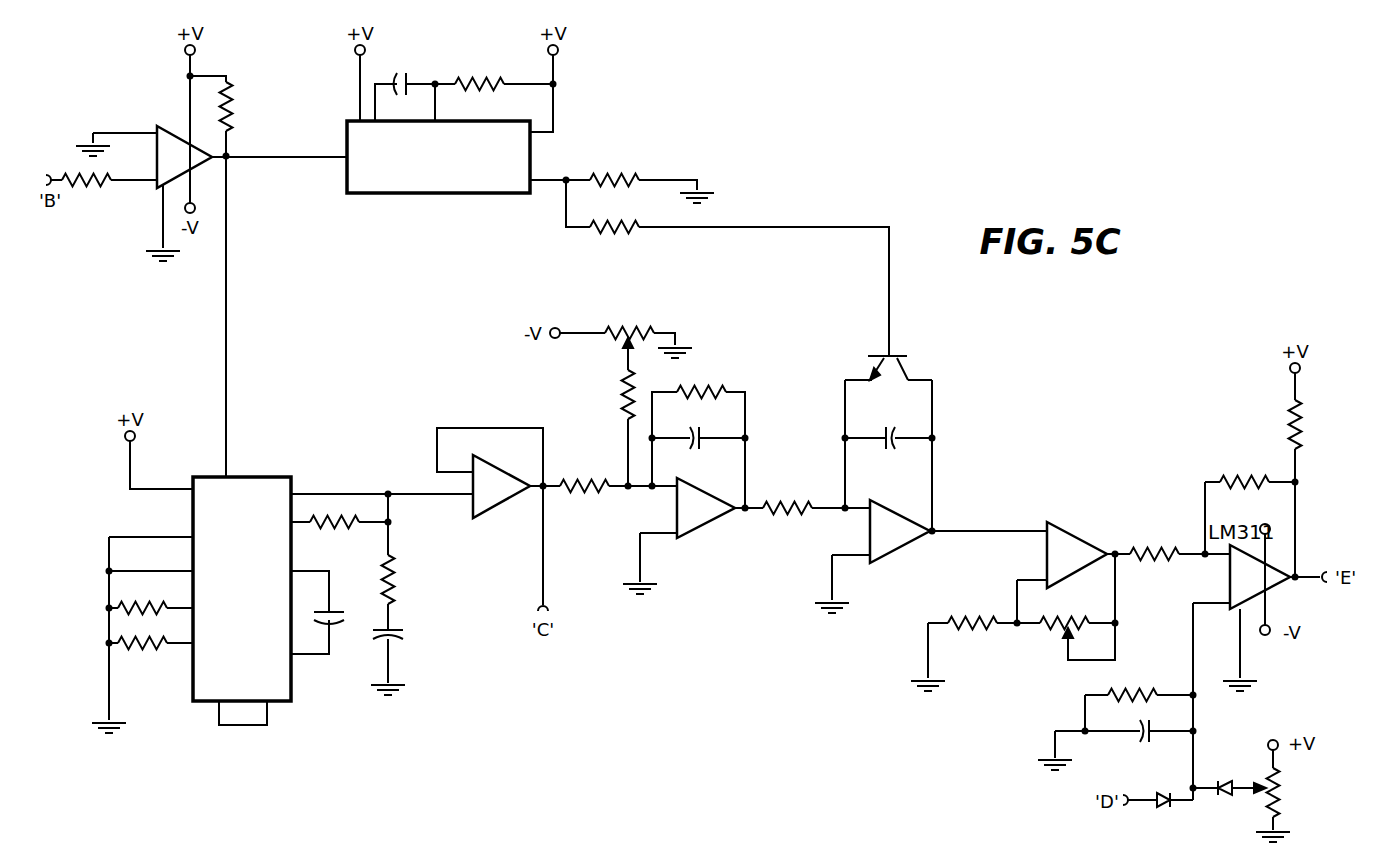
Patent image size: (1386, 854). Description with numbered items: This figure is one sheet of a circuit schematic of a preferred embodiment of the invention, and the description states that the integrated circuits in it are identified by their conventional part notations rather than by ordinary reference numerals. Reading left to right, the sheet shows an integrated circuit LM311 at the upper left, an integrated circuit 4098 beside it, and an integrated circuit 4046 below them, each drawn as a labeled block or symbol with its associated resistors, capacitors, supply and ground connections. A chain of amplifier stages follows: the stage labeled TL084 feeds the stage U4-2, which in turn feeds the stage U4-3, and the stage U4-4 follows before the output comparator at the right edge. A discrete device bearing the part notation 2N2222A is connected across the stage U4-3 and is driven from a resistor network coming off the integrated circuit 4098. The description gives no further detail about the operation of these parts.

The LM311 comparator LM311 is at (164, 151).
The 4098 monostable multivibrator 4098 is at (438, 157).
The 2N2222A transistor 2N2222A is at (946, 363).
The 4046 phase-locked loop 4046 is at (242, 601).
The TL084 operational amplifier U4/1 TL084 is at (503, 500).
The operational amplifier U4/2 U4-2 is at (706, 508).
The operational amplifier U4/3 U4-3 is at (900, 531).
The operational amplifier U4/4 U4-4 is at (1077, 555).